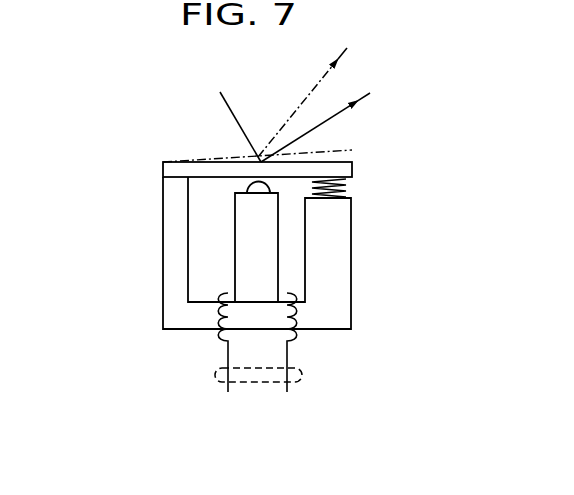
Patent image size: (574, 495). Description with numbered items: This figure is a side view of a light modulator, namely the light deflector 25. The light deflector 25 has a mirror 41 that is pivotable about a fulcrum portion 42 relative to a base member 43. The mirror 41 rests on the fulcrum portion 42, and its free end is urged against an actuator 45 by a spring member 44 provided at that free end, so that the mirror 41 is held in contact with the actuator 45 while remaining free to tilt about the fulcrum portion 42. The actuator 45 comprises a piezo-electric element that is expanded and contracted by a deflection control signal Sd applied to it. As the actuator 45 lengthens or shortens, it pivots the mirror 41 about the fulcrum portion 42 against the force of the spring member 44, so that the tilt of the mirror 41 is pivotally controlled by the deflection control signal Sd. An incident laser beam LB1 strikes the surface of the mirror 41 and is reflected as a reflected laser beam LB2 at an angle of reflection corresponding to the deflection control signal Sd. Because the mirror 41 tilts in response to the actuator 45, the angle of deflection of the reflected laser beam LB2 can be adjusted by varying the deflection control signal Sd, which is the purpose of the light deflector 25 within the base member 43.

The light deflector 25 is at (135, 133).
The mirror 41 is at (355, 168).
The fulcrum portion 42 is at (165, 169).
The base member 43 is at (168, 285).
The spring member 44 is at (345, 187).
The actuator 45 is at (241, 233).
The incident laser beam LB1 is at (235, 118).
The reflected laser beam LB2 is at (322, 79).
The deflection control signal Sd is at (298, 365).